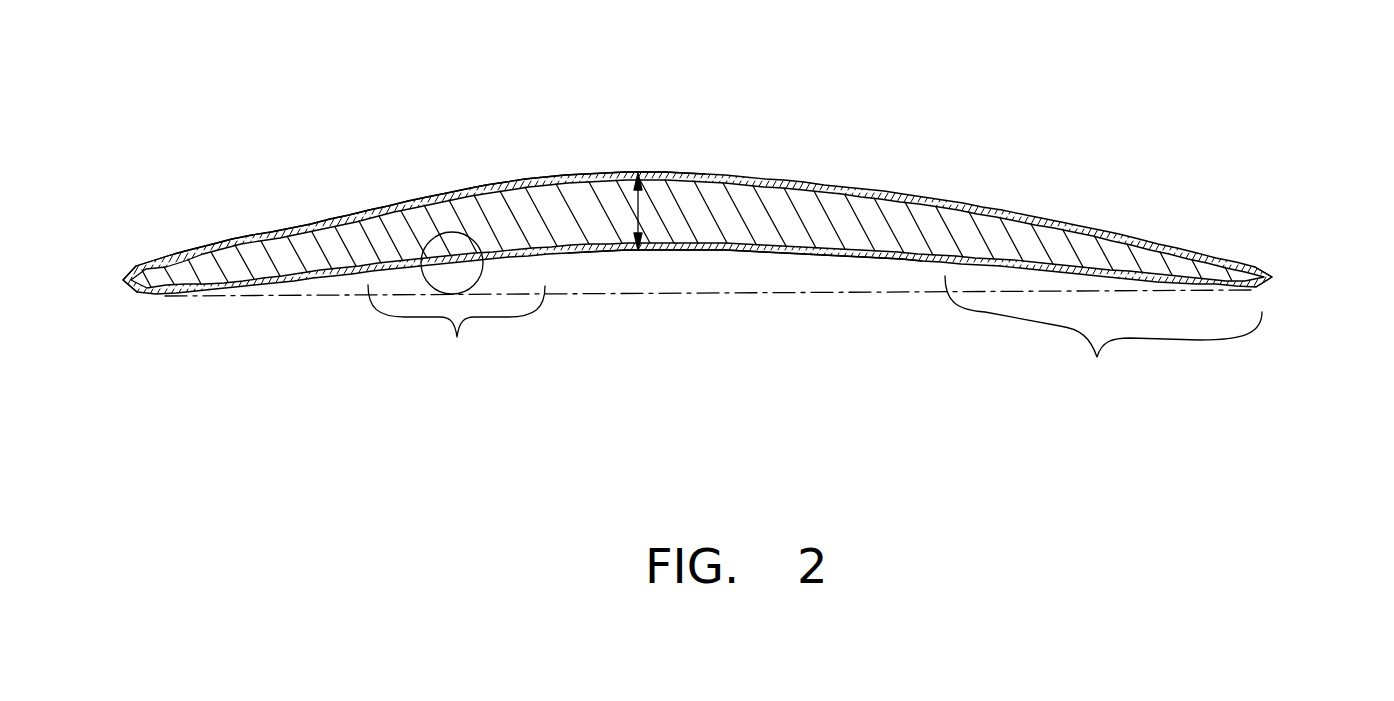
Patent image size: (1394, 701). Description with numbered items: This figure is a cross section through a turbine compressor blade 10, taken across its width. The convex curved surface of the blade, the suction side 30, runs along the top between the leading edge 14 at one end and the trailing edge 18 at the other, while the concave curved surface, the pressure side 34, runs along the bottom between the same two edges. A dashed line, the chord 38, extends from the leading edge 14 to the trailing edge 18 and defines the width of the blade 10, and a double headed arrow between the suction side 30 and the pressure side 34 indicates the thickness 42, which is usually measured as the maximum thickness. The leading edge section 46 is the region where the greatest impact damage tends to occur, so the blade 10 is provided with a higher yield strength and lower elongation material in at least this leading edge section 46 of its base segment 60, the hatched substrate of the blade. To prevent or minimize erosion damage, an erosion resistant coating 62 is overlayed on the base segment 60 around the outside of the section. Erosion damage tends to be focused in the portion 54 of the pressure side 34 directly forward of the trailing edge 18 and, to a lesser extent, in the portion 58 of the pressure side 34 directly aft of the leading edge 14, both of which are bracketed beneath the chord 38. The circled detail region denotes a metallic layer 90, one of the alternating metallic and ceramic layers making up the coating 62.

The turbine compressor blade 10 is at (1017, 71).
The leading edge 14 is at (122, 293).
The trailing edge 18 is at (1275, 289).
The suction side 30 is at (557, 170).
The pressure side 34 is at (706, 256).
The chord 38 is at (680, 300).
The thickness 42 is at (642, 212).
The leading edge section 46 is at (172, 274).
The pressure side portion forward of trailing edge 54 is at (1103, 336).
The pressure side portion aft of leading edge 58 is at (456, 331).
The base segment 60 is at (1017, 232).
The erosion resistant coating 62 is at (332, 207).
The metallic layer 90 is at (483, 237).